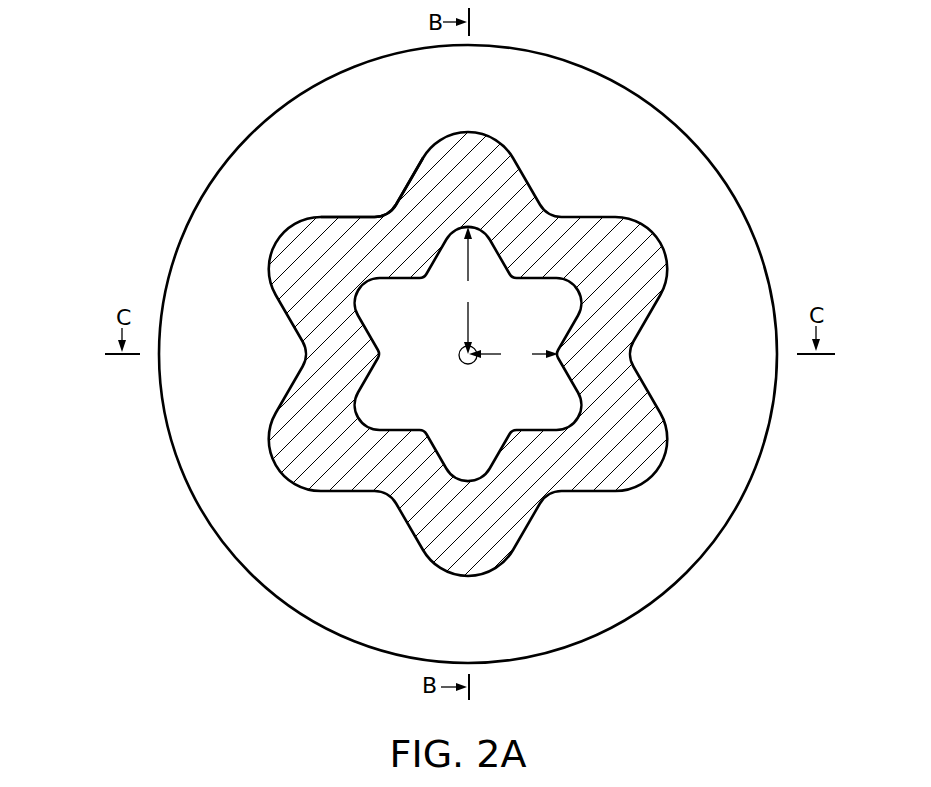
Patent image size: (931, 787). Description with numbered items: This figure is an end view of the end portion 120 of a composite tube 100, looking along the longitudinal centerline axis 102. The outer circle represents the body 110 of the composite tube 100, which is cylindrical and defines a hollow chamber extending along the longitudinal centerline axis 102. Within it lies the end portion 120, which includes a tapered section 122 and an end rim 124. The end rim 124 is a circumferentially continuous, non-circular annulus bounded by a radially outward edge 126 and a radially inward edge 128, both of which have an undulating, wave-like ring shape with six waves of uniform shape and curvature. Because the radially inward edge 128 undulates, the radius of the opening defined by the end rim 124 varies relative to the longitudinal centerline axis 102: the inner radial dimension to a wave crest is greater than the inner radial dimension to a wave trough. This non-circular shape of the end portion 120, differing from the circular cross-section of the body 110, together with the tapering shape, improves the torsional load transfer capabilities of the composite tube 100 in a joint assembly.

The composite tube 100 is at (157, 88).
The longitudinal centerline axis 102 is at (461, 361).
The body 110 is at (170, 267).
The end portion 120 is at (465, 291).
The tapered section 122 is at (608, 96).
The end rim 124 is at (352, 489).
The radially outward edge 126 is at (388, 213).
The radially inward edge 128 is at (418, 279).